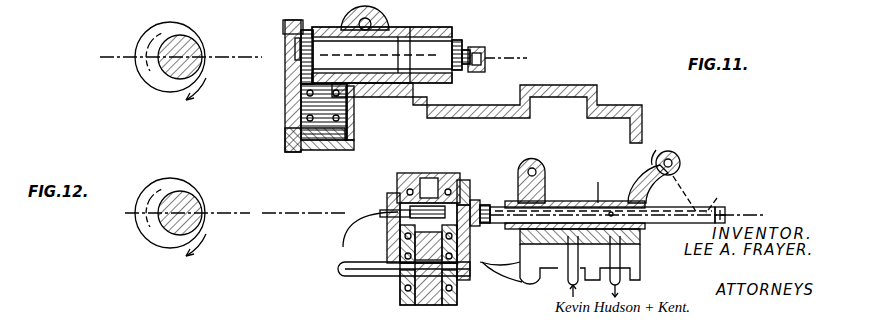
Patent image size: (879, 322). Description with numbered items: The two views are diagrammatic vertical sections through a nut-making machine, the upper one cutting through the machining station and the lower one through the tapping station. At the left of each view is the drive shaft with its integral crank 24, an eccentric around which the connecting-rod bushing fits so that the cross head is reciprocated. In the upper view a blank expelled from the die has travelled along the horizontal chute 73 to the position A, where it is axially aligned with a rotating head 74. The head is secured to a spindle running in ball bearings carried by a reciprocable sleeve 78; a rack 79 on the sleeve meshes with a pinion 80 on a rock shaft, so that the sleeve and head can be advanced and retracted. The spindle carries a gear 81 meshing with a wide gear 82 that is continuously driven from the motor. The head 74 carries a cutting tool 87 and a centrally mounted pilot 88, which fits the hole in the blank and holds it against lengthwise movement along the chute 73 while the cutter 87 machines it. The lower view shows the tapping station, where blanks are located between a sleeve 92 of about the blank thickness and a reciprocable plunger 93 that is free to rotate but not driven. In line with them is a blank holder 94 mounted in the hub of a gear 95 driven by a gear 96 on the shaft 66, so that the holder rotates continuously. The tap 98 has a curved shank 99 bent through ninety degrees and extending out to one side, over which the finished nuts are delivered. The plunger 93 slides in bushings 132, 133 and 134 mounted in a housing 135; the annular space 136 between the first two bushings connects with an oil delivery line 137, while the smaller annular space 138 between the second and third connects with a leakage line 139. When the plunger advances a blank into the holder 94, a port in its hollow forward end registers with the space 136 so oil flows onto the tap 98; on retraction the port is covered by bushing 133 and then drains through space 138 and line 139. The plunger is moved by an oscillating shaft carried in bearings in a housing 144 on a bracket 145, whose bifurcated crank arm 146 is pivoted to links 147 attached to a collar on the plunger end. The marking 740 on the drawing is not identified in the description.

In FIG. 11, the crank 24 is at (187, 45).
In FIG. 12, the crank 24 is at (187, 201).
In FIG. 11, the horizontal chute 73 is at (485, 68).
In FIG. 12, the horizontal chute 73 is at (477, 228).
In FIG. 11, the rotating head 74 is at (454, 40).
In FIG. 11, the reciprocable sleeve 78 is at (418, 45).
In FIG. 11, the rack 79 is at (396, 42).
In FIG. 11, the pinion 80 is at (356, 14).
In FIG. 11, the gear 81 is at (297, 54).
In FIG. 11, the wide gear 82 is at (285, 104).
In FIG. 11, the cutting tool 87 is at (467, 50).
In FIG. 11, the pilot 88 is at (477, 47).
In FIG. 11, the intermediate position A is at (480, 43).
In FIG. 12, the shaft 66 is at (343, 268).
In FIG. 12, the sleeve 92 is at (484, 204).
In FIG. 12, the reciprocable plunger 93 is at (502, 207).
In FIG. 12, the blank holder 94 is at (463, 190).
In FIG. 12, the gear 95 is at (430, 182).
In FIG. 12, the gear 96 is at (440, 302).
In FIG. 12, the tap 98 is at (400, 241).
In FIG. 12, the curved shank 99 is at (343, 247).
In FIG. 12, the bushing 132 is at (546, 195).
In FIG. 12, the bushing 133 is at (601, 183).
In FIG. 12, the bushing 134 is at (664, 180).
In FIG. 12, the housing 135 is at (524, 236).
In FIG. 12, the annular space 136 is at (584, 202).
In FIG. 12, the oil delivery line 137 is at (568, 268).
In FIG. 12, the annular space 138 is at (640, 247).
In FIG. 12, the leakage line 139 is at (610, 268).
In FIG. 12, the shaft bore 740 is at (614, 214).
In FIG. 12, the housing 144 is at (681, 160).
In FIG. 12, the bracket 145 is at (669, 147).
In FIG. 12, the bifurcated crank arm 146 is at (688, 183).
In FIG. 12, the links 147 is at (718, 207).